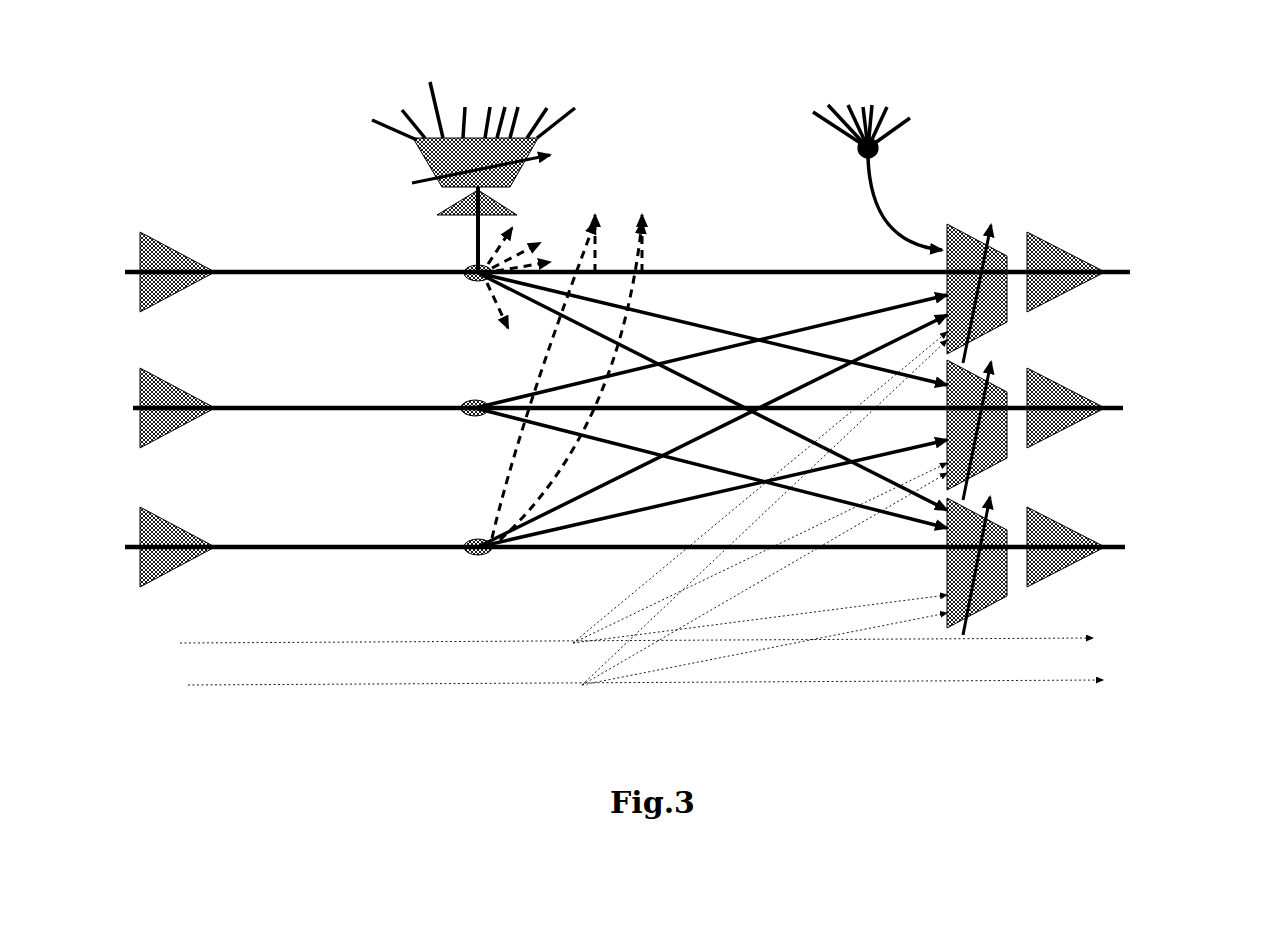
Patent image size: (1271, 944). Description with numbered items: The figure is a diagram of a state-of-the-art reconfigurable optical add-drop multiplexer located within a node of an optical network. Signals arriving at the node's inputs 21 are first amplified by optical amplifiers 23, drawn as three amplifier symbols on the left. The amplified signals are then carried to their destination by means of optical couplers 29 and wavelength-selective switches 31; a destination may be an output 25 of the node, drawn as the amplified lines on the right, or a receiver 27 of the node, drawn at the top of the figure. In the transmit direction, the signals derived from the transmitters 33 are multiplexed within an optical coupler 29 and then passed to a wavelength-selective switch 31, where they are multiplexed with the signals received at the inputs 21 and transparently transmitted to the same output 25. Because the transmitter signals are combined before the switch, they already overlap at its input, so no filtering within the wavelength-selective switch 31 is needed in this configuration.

The inputs 21 is at (125, 377).
The optical amplifiers 23 is at (146, 240).
The output 25 is at (1128, 265).
The receiver 27 is at (552, 68).
The optical coupler 29 is at (463, 402).
The wavelength-selective switch 31 is at (417, 153).
The transmitters 33 is at (905, 80).